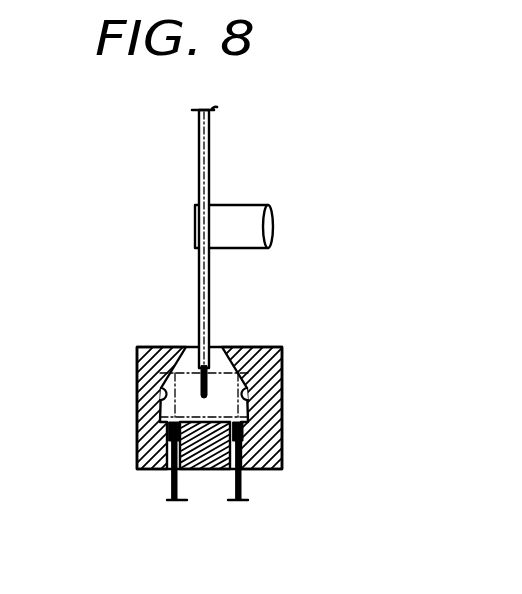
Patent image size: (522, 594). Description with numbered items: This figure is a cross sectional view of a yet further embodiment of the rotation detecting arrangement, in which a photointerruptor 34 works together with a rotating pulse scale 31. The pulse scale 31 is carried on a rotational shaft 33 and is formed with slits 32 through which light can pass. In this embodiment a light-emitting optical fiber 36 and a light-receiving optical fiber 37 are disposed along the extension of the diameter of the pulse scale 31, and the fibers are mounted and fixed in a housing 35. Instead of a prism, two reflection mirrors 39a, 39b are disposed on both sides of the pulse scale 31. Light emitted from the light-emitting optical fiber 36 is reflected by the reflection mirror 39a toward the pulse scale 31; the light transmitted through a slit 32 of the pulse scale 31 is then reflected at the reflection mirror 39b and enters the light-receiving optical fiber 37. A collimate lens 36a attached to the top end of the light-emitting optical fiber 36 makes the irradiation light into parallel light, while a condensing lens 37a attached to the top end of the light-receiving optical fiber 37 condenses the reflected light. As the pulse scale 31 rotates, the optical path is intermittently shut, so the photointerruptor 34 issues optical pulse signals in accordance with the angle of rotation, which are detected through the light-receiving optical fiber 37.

The pulse scale 31 is at (190, 168).
The slit 32 is at (210, 368).
The rotational shaft 33 is at (253, 204).
The photointerruptor 34 is at (284, 427).
The housing 35 is at (148, 348).
The light-emitting optical fiber 36 is at (172, 492).
The collimate lens 36a is at (171, 437).
The light-receiving optical fiber 37 is at (245, 492).
The condensing lens 37a is at (242, 437).
The reflection mirror 39a is at (160, 393).
The reflection mirror 39b is at (250, 390).